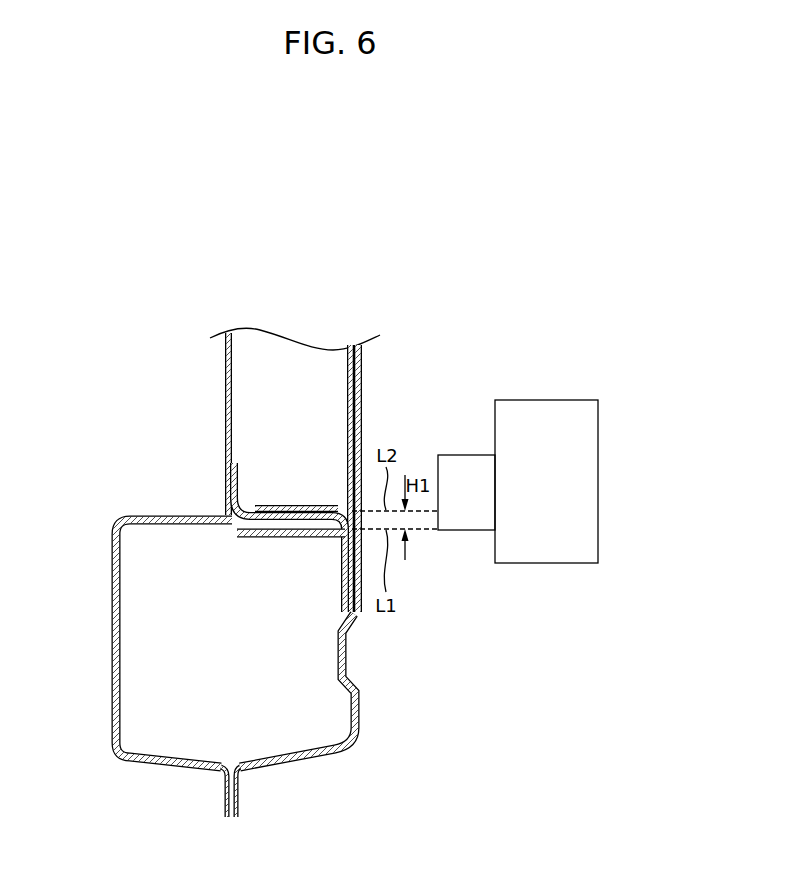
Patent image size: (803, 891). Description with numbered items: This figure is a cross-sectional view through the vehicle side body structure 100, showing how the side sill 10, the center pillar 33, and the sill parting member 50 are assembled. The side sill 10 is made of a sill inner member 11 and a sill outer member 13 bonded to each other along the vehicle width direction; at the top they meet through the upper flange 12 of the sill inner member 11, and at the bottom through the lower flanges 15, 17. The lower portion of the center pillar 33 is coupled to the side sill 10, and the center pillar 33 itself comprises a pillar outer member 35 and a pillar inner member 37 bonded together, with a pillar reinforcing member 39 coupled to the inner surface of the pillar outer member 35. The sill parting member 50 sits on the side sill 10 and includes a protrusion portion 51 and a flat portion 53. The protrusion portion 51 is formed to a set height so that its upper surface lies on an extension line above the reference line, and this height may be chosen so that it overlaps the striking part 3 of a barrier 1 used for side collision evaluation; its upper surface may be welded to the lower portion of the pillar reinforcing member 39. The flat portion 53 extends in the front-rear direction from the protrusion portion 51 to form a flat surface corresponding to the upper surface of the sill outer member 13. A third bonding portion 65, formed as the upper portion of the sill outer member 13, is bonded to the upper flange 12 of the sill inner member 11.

The vehicle side body structure 100 is at (166, 253).
The barrier 1 is at (562, 383).
The striking part 3 is at (463, 455).
The side sill 10 is at (225, 657).
The sill inner member 11 is at (118, 775).
The upper flange 12 is at (220, 505).
The sill outer member 13 is at (330, 695).
The lower flange 15 is at (222, 800).
The lower flange 17 is at (238, 797).
The center pillar 33 is at (324, 456).
The pillar outer member 35 is at (363, 383).
The pillar inner member 37 is at (225, 382).
The pillar reinforcing member 39 is at (367, 418).
The sill parting member 50 is at (190, 453).
The protrusion portion 51 is at (282, 518).
The flat portion 53 is at (307, 530).
The third bonding portion 65 is at (240, 480).